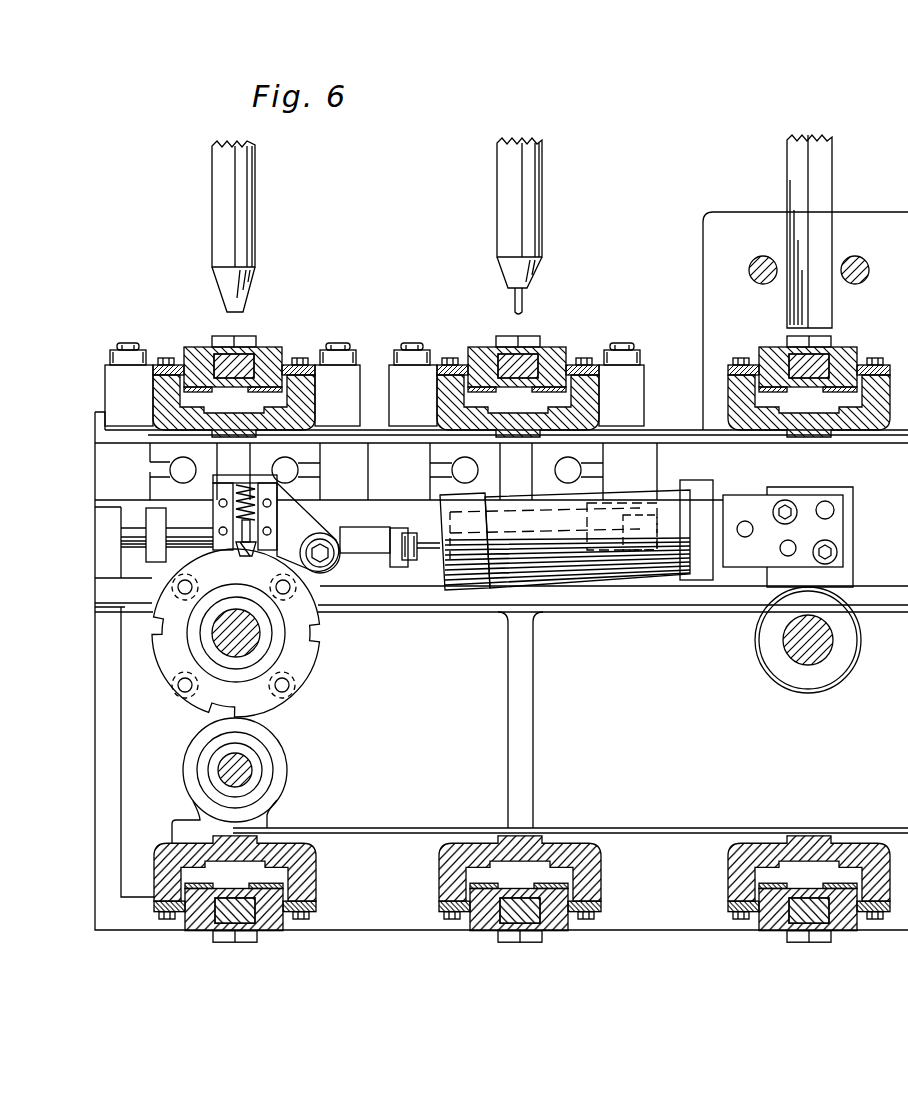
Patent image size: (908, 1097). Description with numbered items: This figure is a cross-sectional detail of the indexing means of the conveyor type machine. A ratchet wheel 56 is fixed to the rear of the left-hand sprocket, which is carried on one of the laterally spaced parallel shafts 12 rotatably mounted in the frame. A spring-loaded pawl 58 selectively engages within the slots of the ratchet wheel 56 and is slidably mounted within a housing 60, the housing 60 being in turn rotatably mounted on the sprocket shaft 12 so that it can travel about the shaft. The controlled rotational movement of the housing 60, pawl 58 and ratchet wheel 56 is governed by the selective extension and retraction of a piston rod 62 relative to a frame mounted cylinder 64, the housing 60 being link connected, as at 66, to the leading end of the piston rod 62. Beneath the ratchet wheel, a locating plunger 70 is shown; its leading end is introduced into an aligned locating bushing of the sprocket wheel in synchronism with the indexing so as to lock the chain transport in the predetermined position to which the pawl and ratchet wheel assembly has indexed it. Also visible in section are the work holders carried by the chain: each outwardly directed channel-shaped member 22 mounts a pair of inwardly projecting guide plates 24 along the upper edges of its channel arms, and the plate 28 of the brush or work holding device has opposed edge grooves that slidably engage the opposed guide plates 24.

The shaft 12 is at (223, 650).
The channel-shaped member 22 is at (584, 400).
The guide plate 24 is at (583, 360).
The plate 28 is at (552, 352).
The ratchet wheel 56 is at (303, 672).
The spring-loaded pawl 58 is at (240, 551).
The housing 60 is at (213, 493).
The piston rod 62 is at (430, 552).
The cylinder 64 is at (567, 570).
The link connection 66 is at (327, 586).
The locating plunger 70 is at (252, 774).